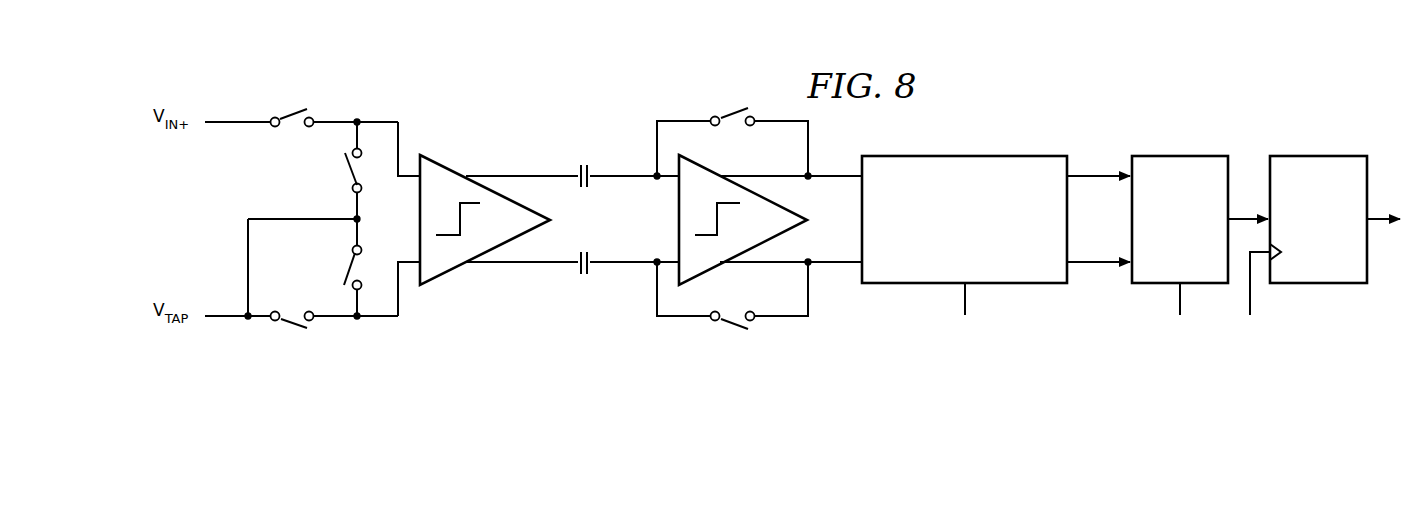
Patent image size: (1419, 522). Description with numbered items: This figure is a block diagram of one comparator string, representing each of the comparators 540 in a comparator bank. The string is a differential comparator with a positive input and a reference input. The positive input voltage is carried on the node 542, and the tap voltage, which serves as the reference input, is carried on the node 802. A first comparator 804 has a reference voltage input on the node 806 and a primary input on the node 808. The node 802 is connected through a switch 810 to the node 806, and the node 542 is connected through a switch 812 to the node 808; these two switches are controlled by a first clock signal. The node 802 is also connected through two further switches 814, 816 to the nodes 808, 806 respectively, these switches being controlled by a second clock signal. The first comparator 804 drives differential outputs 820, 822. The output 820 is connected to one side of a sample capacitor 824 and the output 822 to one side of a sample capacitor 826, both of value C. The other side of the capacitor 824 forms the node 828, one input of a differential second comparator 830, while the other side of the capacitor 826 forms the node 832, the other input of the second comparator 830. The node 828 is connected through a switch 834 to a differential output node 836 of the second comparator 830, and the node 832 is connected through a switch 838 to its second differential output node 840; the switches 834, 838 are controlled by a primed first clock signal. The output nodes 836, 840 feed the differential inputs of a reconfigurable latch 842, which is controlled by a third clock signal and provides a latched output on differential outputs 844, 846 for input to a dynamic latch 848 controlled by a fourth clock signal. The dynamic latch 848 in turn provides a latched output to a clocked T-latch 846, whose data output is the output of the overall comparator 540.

The comparator 540 is at (446, 97).
The node 542 is at (226, 122).
The node 802 is at (228, 316).
The first comparator 804 is at (445, 286).
The node 806 is at (335, 317).
The node 808 is at (335, 122).
The switch 810 is at (292, 327).
The switch 812 is at (292, 115).
The switch 814 is at (345, 172).
The switch 816 is at (346, 270).
The differential output 820 is at (524, 176).
The differential output 822 is at (528, 263).
The sample capacitor 824 is at (580, 165).
The sample capacitor 826 is at (580, 275).
The node 828 is at (653, 174).
The second comparator 830 is at (679, 213).
The node 832 is at (653, 266).
The switch 834 is at (733, 113).
The differential output node 836 is at (813, 172).
The switch 838 is at (733, 325).
The differential output node 840 is at (813, 266).
The reconfigurable latch 842 is at (975, 155).
The differential output 844 is at (1088, 175).
The T-latch 846 is at (1088, 264).
The dynamic latch 848 is at (1190, 155).